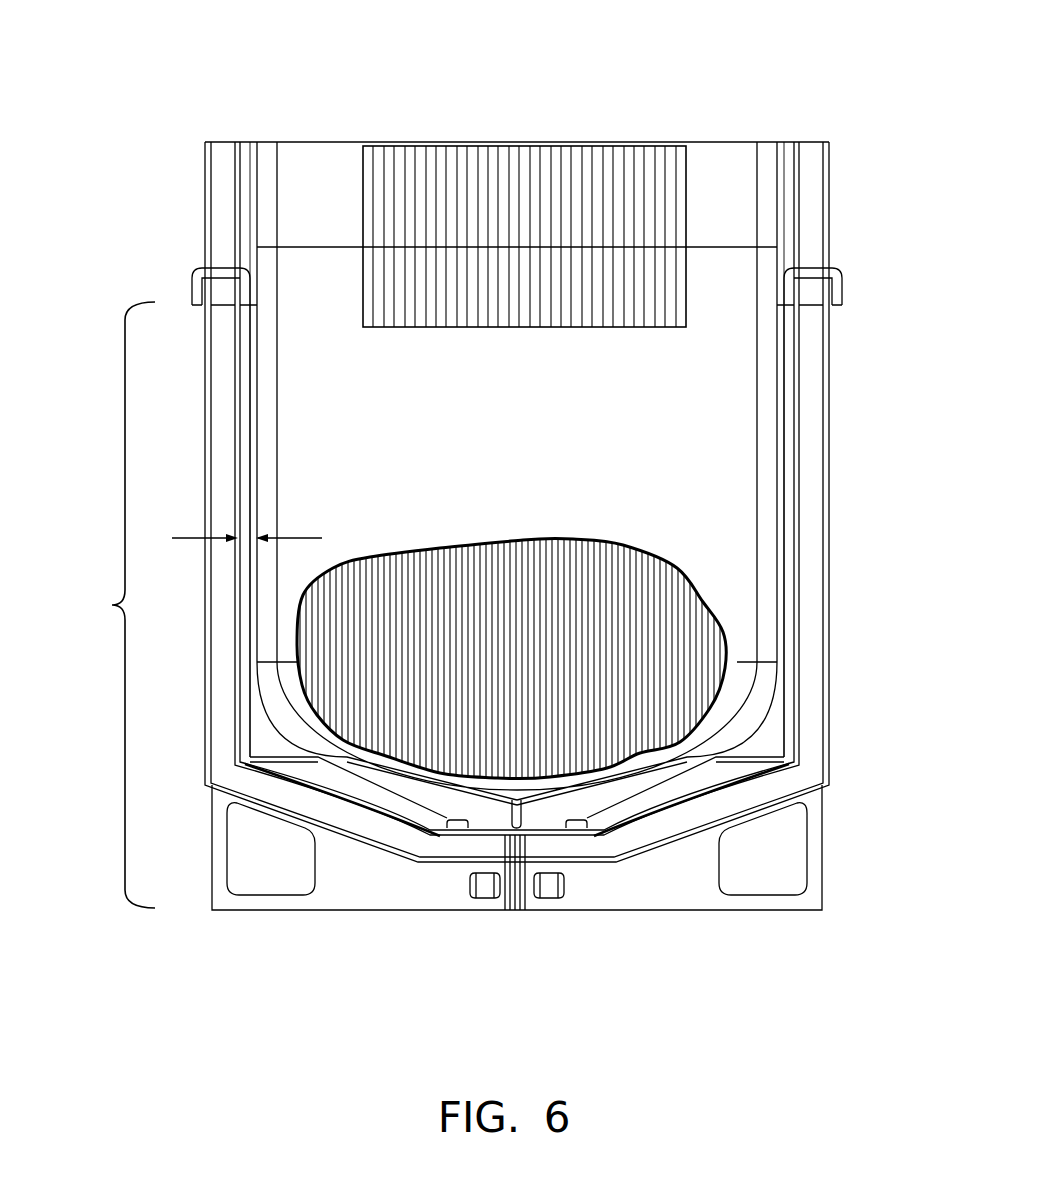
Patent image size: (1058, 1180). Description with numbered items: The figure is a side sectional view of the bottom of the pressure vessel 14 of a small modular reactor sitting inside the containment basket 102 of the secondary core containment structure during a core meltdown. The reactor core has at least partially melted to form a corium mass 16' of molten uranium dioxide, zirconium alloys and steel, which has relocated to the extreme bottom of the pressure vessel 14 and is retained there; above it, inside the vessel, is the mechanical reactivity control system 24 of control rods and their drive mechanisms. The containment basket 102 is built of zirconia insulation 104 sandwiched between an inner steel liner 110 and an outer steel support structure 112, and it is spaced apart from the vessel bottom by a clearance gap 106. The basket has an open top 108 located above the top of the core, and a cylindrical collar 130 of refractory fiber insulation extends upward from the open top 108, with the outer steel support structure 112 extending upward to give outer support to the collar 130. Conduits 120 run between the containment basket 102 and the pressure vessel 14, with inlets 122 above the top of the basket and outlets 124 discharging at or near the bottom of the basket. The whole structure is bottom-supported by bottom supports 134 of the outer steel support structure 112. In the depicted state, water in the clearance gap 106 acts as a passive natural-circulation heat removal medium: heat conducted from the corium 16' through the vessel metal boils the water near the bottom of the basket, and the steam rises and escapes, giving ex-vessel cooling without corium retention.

The containment basket 102 is at (112, 603).
The zirconia insulation 104 is at (822, 612).
The clearance gap 106 is at (305, 530).
The open top 108 is at (597, 202).
The inner steel liner 110 is at (800, 690).
The outer steel support structure 112 is at (835, 757).
The conduits 120 is at (243, 385).
The inlets 122 is at (195, 283).
The outlets 124 is at (445, 828).
The cylindrical collar 130 is at (820, 205).
The bottom supports 134 is at (750, 897).
The pressure vessel 14 is at (778, 470).
The corium mass 16' is at (511, 660).
The mechanical reactivity control system 24 is at (518, 230).